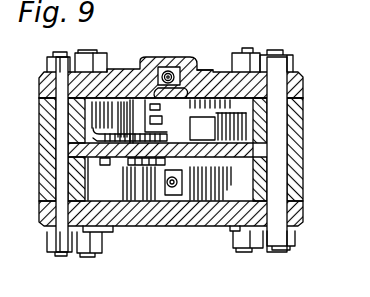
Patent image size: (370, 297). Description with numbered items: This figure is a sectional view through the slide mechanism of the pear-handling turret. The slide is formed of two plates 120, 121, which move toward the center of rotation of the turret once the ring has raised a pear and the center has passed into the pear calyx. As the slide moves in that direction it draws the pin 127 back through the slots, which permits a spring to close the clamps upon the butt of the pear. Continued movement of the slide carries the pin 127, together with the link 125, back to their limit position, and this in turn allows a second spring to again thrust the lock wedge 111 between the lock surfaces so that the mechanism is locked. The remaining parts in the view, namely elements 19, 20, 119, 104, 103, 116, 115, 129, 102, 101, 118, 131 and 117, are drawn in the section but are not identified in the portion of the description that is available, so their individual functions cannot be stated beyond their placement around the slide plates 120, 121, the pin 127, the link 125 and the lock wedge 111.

The upper plate 19 is at (303, 79).
The lower plate 20 is at (303, 212).
The intermediate plate 119 is at (72, 153).
The nut 104 is at (88, 52).
The nut 103 is at (250, 56).
The nut 116 is at (100, 233).
The nut 115 is at (228, 226).
The link 125 is at (153, 66).
The screw head recess 129 is at (171, 66).
The plate 121 is at (199, 71).
The partition 102 is at (132, 143).
The upper chamber element 101 is at (208, 100).
The pin 127 is at (186, 128).
The lower chamber 118 is at (106, 160).
The spring pack 131 is at (118, 195).
The screw 117 is at (170, 190).
The lock wedge 111 is at (190, 195).
The plate 120 is at (220, 160).